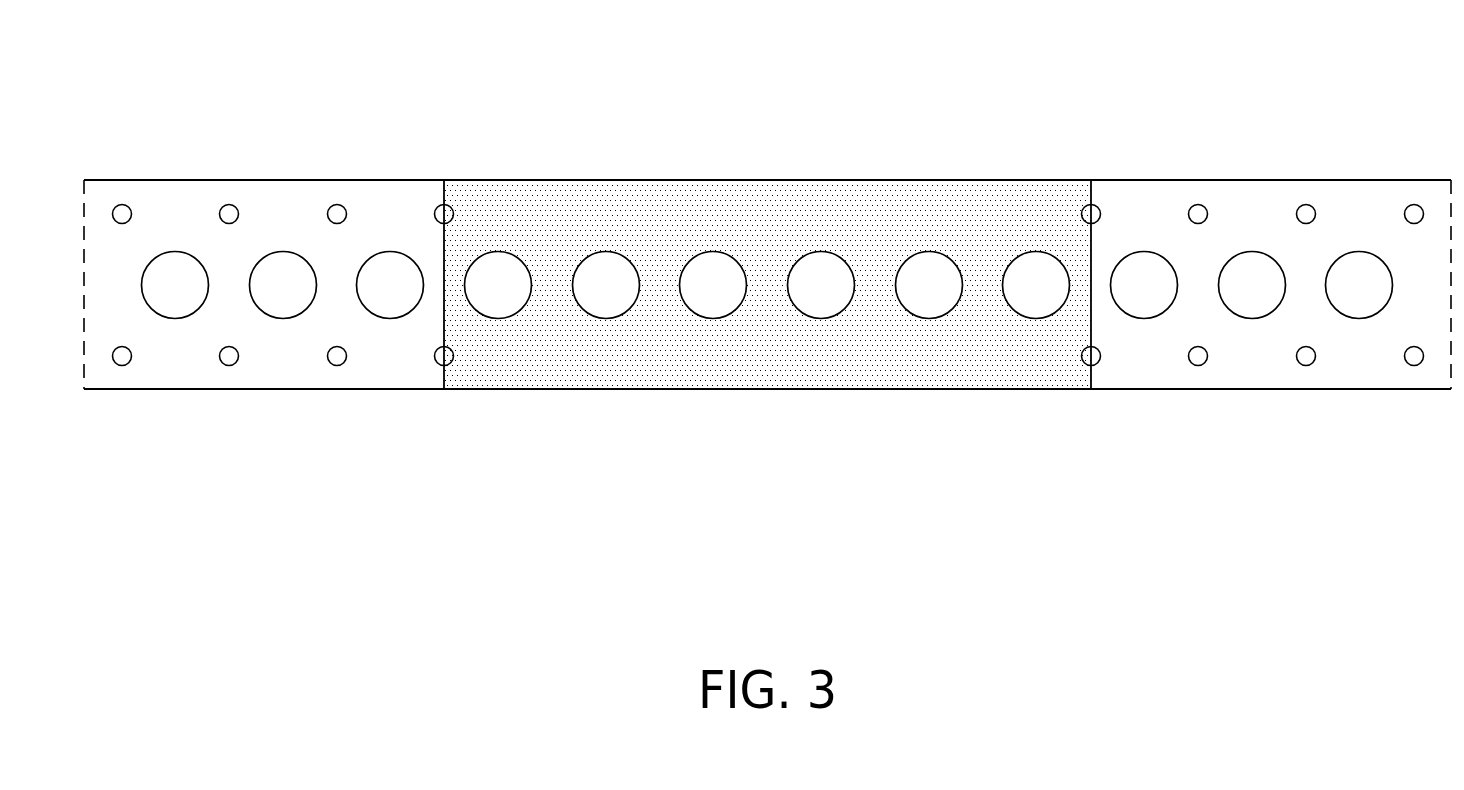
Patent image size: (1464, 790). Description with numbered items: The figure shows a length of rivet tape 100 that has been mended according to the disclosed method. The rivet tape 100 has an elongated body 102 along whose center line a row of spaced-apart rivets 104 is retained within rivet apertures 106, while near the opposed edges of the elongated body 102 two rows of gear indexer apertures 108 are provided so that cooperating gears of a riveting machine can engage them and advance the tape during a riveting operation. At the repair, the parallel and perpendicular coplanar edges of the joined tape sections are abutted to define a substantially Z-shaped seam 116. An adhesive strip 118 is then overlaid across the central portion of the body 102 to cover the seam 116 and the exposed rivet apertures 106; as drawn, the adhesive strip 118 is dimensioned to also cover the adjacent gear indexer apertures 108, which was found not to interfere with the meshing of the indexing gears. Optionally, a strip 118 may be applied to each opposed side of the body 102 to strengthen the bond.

The rivet tape 100 is at (1001, 98).
The elongated body 102 is at (1367, 205).
The rivets 104 is at (175, 252).
The rivet apertures 106 is at (498, 252).
The gear indexer apertures 108 is at (338, 205).
The seam 116 is at (722, 190).
The adhesive strip 118 is at (602, 372).